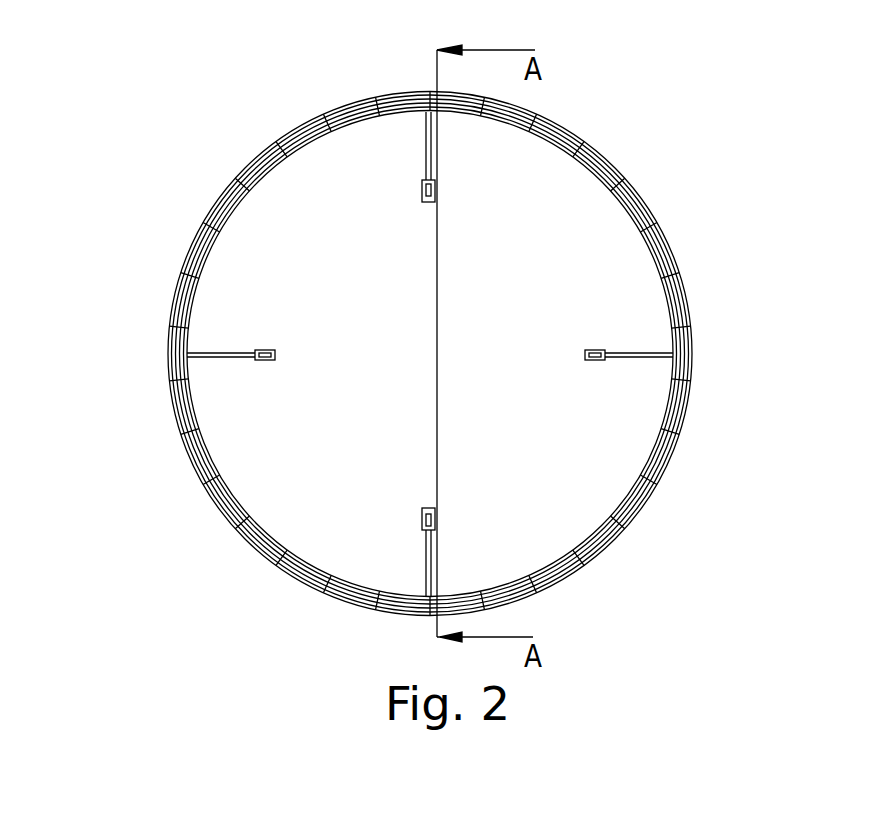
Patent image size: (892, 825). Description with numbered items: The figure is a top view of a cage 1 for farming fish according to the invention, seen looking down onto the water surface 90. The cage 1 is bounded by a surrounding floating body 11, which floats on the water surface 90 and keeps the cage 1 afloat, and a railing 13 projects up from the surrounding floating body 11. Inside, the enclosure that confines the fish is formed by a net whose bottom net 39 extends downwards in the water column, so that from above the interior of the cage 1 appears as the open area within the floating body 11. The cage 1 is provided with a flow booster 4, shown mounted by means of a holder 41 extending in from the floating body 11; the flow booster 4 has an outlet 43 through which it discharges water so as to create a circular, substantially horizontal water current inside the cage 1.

The cage 1 is at (272, 97).
The surrounding floating body 11 is at (212, 205).
The railing 13 is at (213, 260).
The flow booster 4 is at (223, 353).
The holder 41 is at (223, 356).
The outlet 43 is at (262, 362).
The bottom net 39 is at (342, 430).
The water surface 90 is at (512, 363).